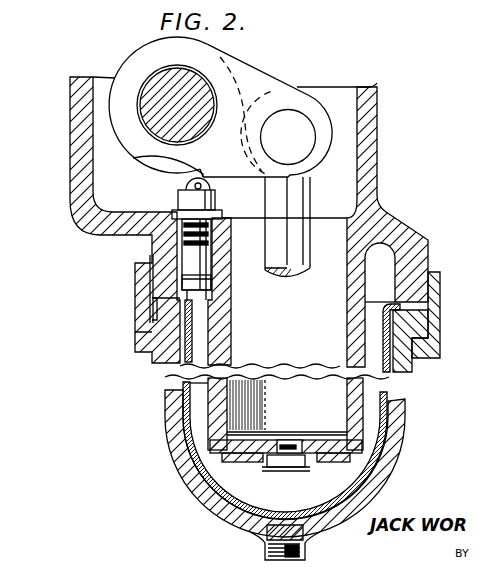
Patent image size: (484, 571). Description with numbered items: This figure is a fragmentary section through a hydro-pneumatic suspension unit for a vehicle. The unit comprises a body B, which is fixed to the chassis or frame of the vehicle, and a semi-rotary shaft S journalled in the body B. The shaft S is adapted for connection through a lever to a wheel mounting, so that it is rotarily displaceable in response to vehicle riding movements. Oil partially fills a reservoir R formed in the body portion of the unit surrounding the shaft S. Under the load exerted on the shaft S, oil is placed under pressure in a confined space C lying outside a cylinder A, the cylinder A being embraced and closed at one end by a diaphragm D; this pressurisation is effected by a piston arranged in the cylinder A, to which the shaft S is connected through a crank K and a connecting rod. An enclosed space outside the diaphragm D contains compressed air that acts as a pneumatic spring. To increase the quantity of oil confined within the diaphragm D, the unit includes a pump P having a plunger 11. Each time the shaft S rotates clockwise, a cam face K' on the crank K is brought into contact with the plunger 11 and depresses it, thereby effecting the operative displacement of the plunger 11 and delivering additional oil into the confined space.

The semi-rotary shaft S is at (162, 80).
The crank K is at (220, 157).
The cam face K' is at (202, 117).
The plunger 11 is at (209, 186).
The reservoir R is at (105, 200).
The body B is at (108, 235).
The pump P is at (183, 255).
The confined space C is at (203, 347).
The cylinder A is at (357, 347).
The diaphragm D is at (167, 367).